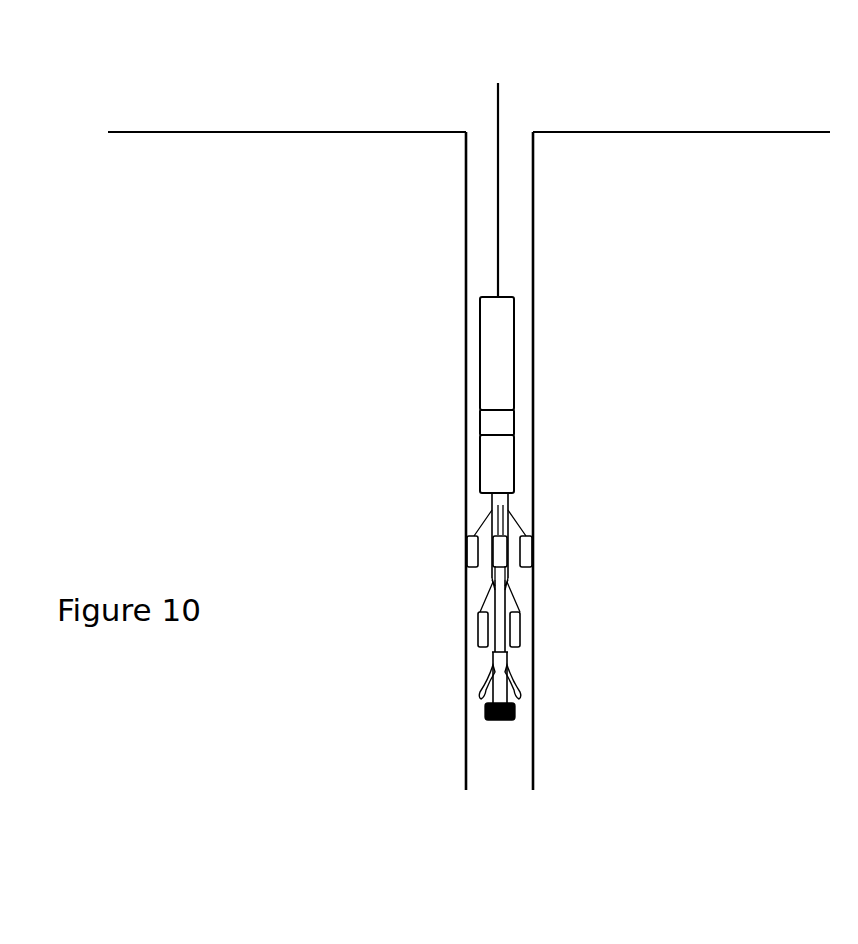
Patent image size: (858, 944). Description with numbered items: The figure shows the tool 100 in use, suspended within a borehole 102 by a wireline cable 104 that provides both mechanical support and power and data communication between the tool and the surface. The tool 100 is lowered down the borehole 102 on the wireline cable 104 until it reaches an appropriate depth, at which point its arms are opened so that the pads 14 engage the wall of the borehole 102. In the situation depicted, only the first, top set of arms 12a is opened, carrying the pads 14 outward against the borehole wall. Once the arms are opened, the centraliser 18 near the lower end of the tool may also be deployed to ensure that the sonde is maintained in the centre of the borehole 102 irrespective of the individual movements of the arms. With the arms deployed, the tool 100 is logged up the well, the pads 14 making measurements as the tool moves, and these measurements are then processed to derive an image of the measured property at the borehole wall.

The tool 100 is at (479, 472).
The borehole 102 is at (535, 243).
The wireline cable 104 is at (499, 92).
The first, top set of arms 12a is at (512, 517).
The pads 14 is at (534, 551).
The centraliser 18 is at (520, 678).